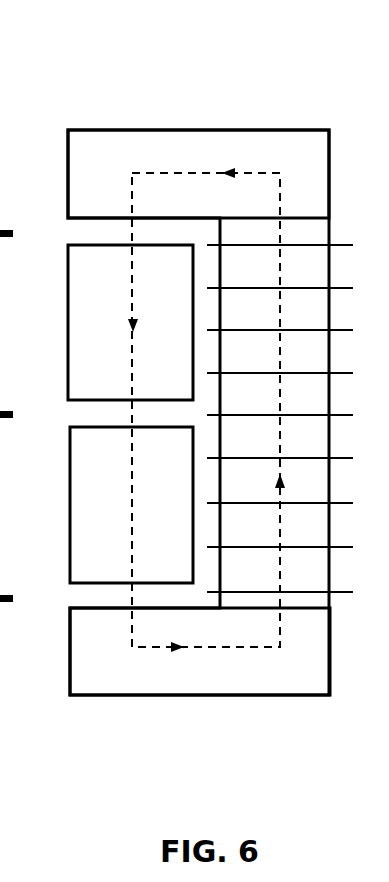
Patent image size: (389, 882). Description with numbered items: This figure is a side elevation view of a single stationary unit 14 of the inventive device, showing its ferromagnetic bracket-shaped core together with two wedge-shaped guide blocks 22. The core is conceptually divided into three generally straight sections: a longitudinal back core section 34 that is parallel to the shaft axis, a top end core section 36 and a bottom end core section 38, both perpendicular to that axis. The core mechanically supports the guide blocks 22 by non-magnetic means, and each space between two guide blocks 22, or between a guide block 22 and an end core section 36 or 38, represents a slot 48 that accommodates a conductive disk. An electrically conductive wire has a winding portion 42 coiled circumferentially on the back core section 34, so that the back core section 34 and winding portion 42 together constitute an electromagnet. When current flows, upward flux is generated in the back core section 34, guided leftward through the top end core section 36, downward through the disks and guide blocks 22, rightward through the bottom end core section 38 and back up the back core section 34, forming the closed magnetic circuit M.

The stationary unit 14 is at (300, 94).
The top end core section 36 is at (190, 146).
The bottom end core section 38 is at (218, 663).
The guide block 22 is at (85, 308).
The back core section 34 is at (310, 535).
The winding portion 42 is at (250, 415).
The magnetic circuit M is at (279, 187).
The slot 48 is at (70, 232).